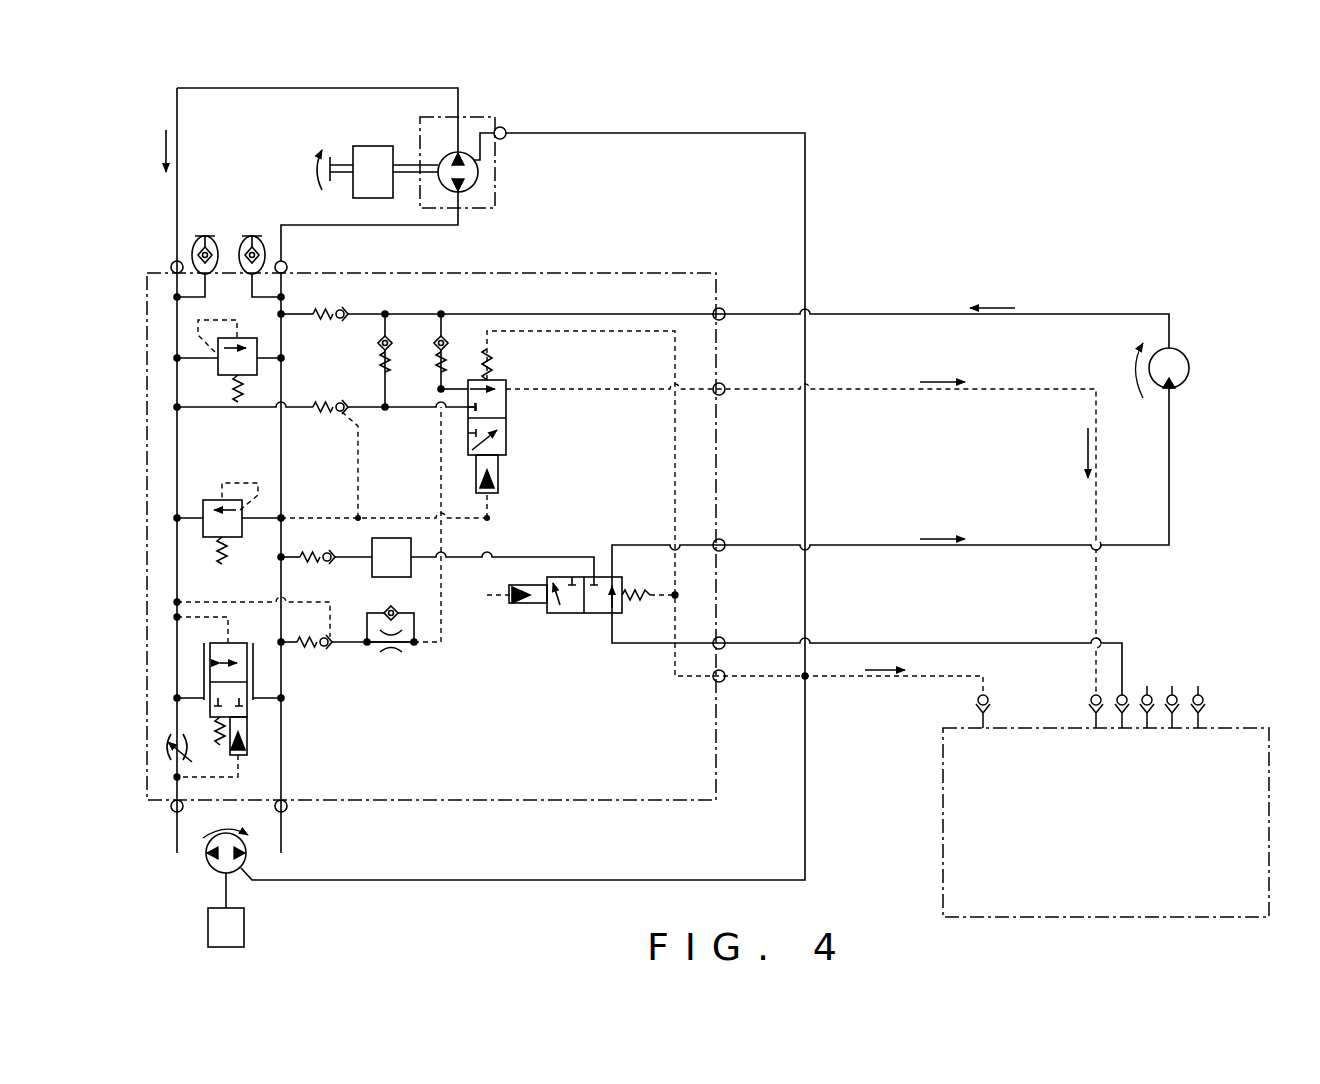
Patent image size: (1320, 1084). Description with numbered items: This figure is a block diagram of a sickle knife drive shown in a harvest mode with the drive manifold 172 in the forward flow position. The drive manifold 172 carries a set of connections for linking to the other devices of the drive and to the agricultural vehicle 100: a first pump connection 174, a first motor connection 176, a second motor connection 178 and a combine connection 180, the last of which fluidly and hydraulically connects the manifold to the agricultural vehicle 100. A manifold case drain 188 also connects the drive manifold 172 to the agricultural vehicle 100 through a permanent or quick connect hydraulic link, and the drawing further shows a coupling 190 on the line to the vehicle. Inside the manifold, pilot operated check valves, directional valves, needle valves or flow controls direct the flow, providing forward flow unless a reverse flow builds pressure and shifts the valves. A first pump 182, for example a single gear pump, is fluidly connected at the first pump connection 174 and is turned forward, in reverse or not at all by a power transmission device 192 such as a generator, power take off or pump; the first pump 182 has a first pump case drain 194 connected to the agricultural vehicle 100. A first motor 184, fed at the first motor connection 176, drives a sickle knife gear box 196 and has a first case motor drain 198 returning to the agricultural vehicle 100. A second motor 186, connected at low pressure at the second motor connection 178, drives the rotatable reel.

The agricultural vehicle 100 is at (1257, 724).
The drive manifold 172 is at (140, 467).
The first pump connection 174 is at (172, 262).
The first motor connection 176 is at (172, 811).
The second motor connection 178 is at (722, 308).
The combine connection 180 is at (723, 384).
The first pump 182 is at (499, 112).
The first motor 184 is at (207, 858).
The second motor 186 is at (1192, 352).
The manifold case drain 188 is at (722, 681).
The coupling 190 is at (989, 696).
The power transmission device 192 is at (368, 160).
The first pump case drain 194 is at (506, 139).
The sickle knife gear box 196 is at (203, 943).
The first case motor drain 198 is at (240, 872).